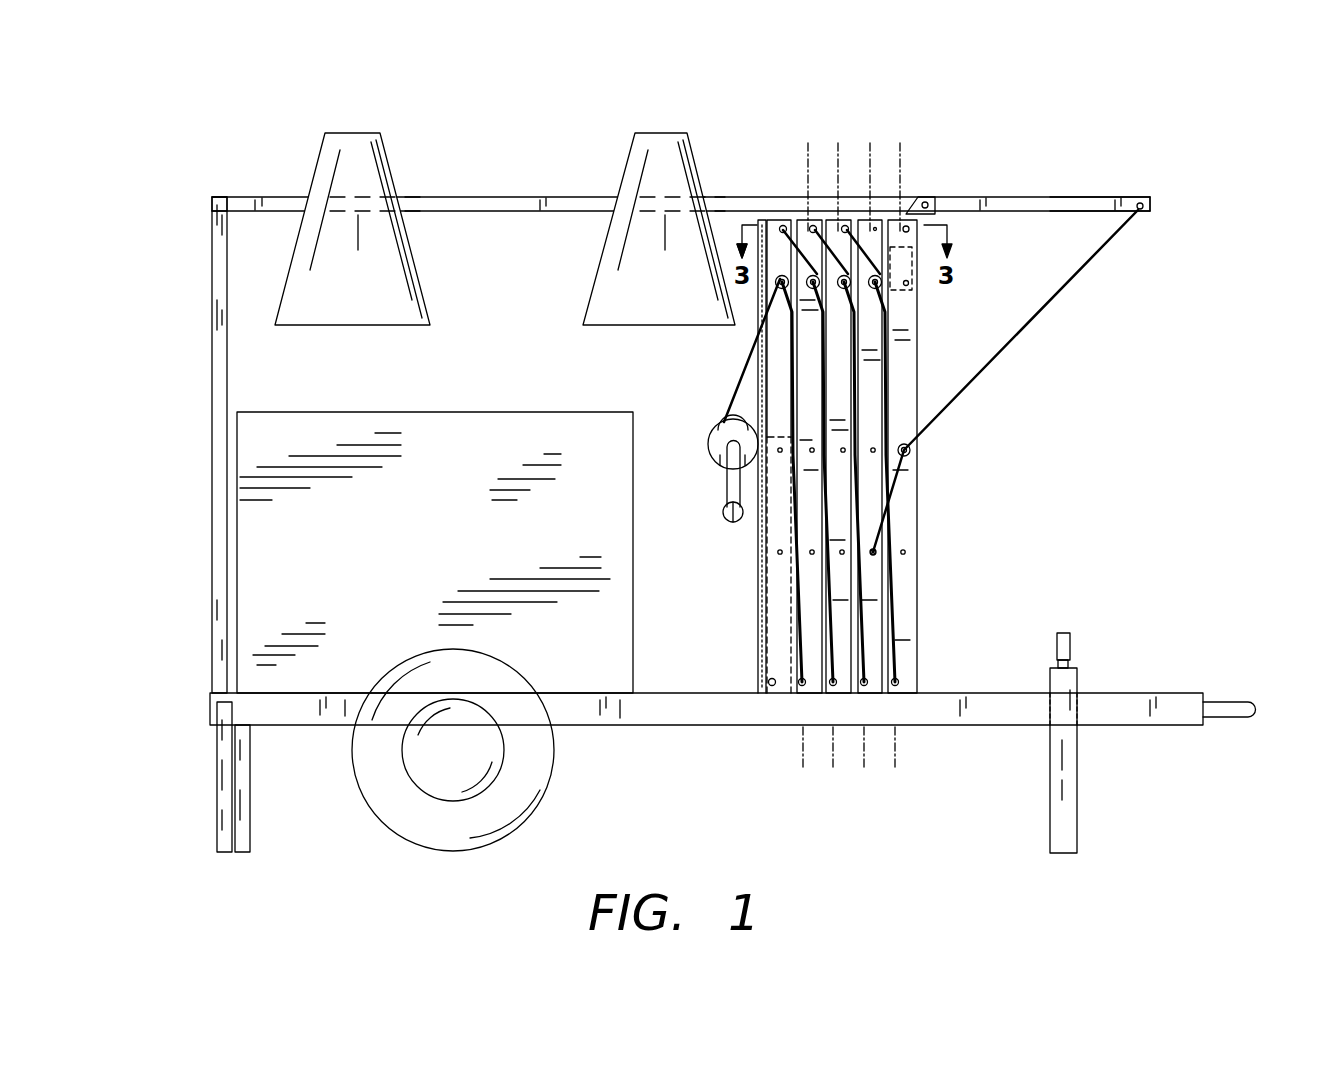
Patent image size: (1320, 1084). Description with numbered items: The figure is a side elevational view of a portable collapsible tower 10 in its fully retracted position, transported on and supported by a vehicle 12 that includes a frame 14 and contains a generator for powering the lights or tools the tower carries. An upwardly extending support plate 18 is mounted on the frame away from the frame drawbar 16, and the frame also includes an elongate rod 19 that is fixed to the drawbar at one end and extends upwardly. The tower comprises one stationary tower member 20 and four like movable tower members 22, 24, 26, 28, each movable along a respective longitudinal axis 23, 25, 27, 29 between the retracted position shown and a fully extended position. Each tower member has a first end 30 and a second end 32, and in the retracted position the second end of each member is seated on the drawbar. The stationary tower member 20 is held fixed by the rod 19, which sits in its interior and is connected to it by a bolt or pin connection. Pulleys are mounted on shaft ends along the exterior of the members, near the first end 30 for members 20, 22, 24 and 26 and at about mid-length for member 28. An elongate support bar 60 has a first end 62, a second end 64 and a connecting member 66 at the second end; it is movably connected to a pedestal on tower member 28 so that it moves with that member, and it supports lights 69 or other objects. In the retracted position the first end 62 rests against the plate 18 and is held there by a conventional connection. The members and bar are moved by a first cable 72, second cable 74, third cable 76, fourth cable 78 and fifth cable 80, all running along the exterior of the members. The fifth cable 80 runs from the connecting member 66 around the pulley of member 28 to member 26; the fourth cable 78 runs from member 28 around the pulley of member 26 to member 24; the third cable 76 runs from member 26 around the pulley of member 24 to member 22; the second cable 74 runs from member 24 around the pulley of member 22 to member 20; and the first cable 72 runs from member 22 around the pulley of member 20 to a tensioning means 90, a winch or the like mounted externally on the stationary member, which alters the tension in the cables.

The portable collapsible tower 10 is at (1150, 378).
The vehicle 12 is at (548, 392).
The frame 14 is at (632, 726).
The frame drawbar 16 is at (1000, 712).
The support plate 18 is at (212, 350).
The elongate rod 19 is at (765, 638).
The stationary tower member 20 is at (757, 556).
The first movable tower member 22 is at (800, 223).
The longitudinal axis 23 is at (803, 755).
The second movable tower member 24 is at (828, 223).
The longitudinal axis 25 is at (833, 755).
The third movable tower member 26 is at (878, 222).
The longitudinal axis 27 is at (864, 752).
The fourth movable tower member 28 is at (918, 520).
The longitudinal axis 29 is at (895, 752).
The first end 30 is at (918, 228).
The second end 32 is at (915, 683).
The elongate support bar 60 is at (458, 197).
The first end 62 is at (225, 197).
The second end 64 is at (1110, 197).
The connecting member 66 is at (1152, 206).
The lights 69 is at (350, 133).
The first cable 72 is at (740, 373).
The second cable 74 is at (828, 570).
The third cable 76 is at (862, 596).
The fourth cable 78 is at (887, 360).
The fifth cable 80 is at (1020, 323).
The tensioning means 90 is at (718, 462).